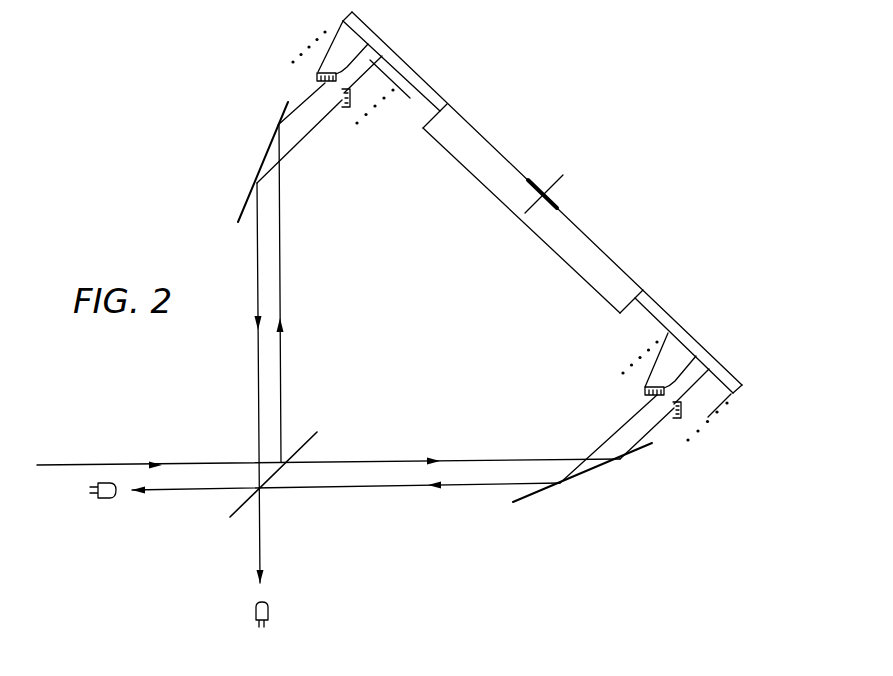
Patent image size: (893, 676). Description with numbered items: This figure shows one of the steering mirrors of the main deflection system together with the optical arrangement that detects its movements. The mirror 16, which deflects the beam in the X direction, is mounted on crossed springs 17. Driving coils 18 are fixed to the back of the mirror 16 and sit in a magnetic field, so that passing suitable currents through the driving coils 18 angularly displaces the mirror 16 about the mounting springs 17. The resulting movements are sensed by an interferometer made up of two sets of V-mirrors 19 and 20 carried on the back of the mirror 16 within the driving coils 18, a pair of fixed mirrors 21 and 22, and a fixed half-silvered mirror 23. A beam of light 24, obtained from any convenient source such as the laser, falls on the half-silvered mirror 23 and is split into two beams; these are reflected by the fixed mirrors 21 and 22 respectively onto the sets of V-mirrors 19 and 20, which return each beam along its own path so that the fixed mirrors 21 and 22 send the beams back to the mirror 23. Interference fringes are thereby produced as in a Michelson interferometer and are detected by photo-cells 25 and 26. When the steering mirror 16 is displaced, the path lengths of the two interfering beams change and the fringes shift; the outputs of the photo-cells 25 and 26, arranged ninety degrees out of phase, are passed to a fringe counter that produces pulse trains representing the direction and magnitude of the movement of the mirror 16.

The mirror 16 is at (418, 82).
The crossed springs 17 is at (548, 191).
The driving coils 18 is at (312, 42).
The set of V-mirrors 19 is at (378, 46).
The set of V-mirrors 20 is at (703, 365).
The fixed mirror 21 is at (268, 150).
The fixed mirror 22 is at (600, 467).
The half-silvered mirror 23 is at (272, 478).
The beam of light 24 is at (103, 463).
The photo-cell 25 is at (267, 602).
The photo-cell 26 is at (110, 498).